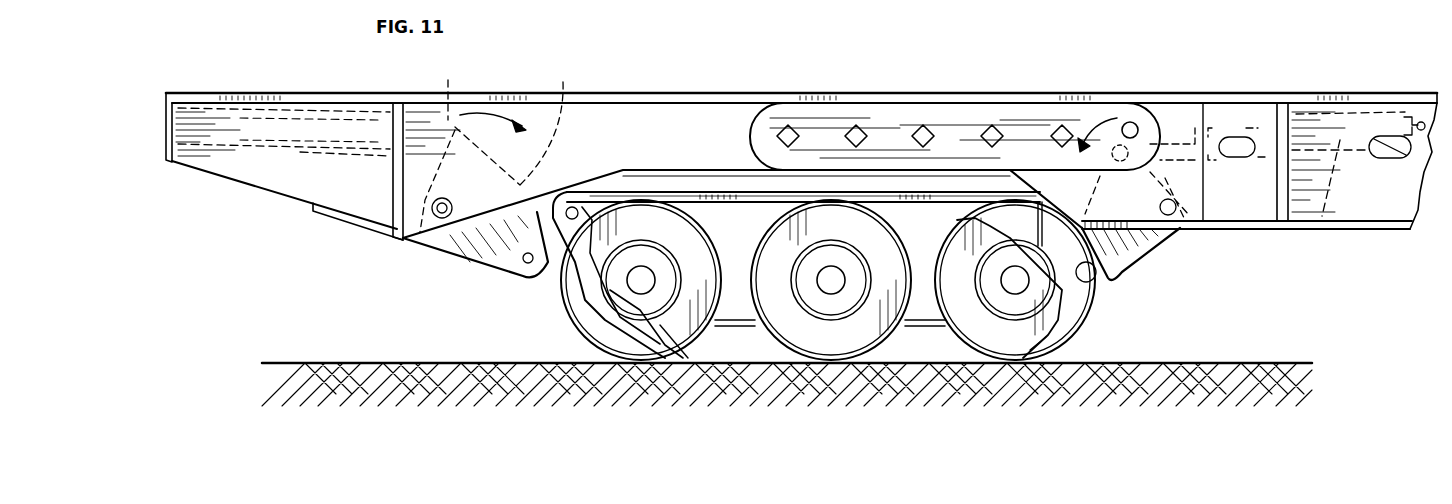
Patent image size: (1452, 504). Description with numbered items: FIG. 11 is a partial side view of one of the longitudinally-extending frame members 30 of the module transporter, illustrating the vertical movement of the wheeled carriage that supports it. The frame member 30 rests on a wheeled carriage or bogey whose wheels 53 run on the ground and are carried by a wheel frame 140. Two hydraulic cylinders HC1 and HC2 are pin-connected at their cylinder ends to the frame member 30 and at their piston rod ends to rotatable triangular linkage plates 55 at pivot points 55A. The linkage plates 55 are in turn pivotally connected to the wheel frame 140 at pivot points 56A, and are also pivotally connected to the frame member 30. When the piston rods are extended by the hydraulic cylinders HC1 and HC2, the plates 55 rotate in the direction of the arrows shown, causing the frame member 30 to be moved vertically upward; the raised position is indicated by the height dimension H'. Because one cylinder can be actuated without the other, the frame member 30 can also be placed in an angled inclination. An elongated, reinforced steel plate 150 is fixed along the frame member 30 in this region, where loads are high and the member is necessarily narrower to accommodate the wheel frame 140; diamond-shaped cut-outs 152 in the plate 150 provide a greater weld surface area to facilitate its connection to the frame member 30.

The frame member 30 is at (1276, 92).
The wheel 53 is at (1020, 346).
The triangular linkage plate 55 is at (556, 105).
The pivot point 55A is at (449, 106).
The pivot point 56A is at (523, 264).
The wheel frame 140 is at (928, 336).
The reinforced steel plate 150 is at (958, 125).
The cut-out 152 is at (858, 128).
The hydraulic cylinder HC1 is at (312, 128).
The hydraulic cylinder HC2 is at (1322, 224).
The deck height H' is at (149, 228).